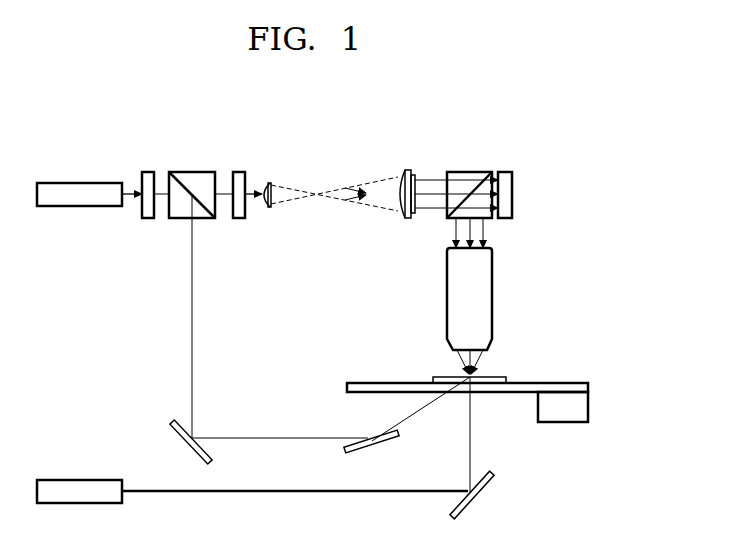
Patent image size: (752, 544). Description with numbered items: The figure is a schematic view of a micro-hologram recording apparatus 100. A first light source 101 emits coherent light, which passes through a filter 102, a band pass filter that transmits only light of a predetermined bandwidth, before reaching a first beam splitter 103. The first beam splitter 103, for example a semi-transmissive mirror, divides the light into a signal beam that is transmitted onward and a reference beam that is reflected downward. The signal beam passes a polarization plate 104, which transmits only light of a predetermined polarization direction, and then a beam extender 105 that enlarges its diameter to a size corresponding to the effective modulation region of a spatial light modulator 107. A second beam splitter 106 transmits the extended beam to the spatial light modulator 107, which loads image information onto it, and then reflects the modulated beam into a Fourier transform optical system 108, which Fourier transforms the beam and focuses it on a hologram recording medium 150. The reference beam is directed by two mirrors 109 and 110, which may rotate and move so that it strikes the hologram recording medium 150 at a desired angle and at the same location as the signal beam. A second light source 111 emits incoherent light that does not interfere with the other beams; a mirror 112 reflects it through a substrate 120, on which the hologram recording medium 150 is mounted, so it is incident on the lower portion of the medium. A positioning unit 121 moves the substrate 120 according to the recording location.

The micro-hologram recording apparatus 100 is at (64, 298).
The first light source 101 is at (79, 182).
The filter 102 is at (147, 171).
The first beam splitter 103 is at (192, 171).
The polarization plate 104 is at (239, 171).
The beam extender 105 is at (263, 161).
The second beam splitter 106 is at (468, 171).
The spatial light modulator 107 is at (505, 171).
The Fourier transform optical system 108 is at (493, 296).
The mirror 109 is at (181, 441).
The mirror 110 is at (376, 449).
The second light source 111 is at (79, 480).
The mirror 112 is at (475, 500).
The substrate 120 is at (590, 388).
The positioning unit 121 is at (590, 412).
The hologram recording medium 150 is at (506, 378).